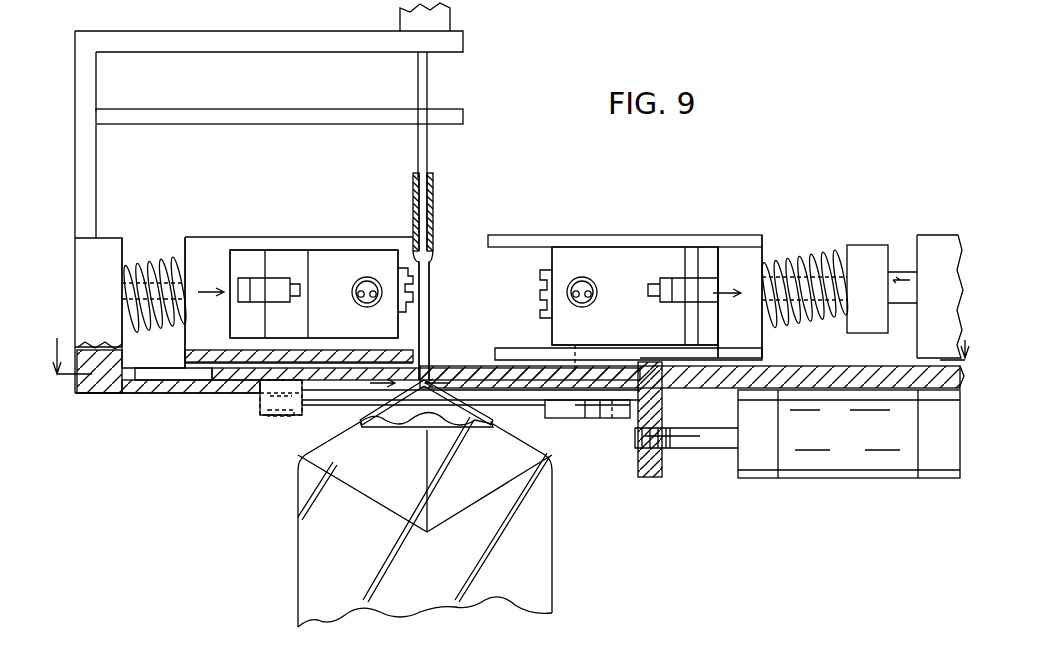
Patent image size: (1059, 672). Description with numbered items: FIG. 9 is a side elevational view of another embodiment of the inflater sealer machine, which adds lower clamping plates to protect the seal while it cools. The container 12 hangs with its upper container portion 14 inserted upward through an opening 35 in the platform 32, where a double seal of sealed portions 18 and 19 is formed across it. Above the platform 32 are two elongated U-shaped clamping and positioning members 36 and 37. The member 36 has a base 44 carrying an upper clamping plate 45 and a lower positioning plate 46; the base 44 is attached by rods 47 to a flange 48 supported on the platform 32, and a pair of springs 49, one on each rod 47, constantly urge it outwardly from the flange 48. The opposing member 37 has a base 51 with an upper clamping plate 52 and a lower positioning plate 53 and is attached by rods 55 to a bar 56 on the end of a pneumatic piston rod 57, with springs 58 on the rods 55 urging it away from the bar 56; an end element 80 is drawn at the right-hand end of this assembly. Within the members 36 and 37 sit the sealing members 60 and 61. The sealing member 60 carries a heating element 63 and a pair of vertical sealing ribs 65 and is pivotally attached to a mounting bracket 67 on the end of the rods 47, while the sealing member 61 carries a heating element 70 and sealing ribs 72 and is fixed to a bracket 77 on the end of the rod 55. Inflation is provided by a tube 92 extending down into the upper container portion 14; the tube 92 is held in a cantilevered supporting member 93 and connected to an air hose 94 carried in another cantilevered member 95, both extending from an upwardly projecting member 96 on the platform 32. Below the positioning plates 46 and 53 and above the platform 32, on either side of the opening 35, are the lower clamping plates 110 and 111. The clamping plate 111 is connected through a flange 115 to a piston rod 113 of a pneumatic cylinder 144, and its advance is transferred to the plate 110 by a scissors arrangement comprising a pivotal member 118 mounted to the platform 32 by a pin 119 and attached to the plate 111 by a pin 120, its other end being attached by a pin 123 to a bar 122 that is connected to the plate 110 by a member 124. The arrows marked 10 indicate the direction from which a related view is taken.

The section line / viewing direction 10 is at (506, 338).
The container 12 is at (553, 553).
The upper container portion 14 is at (433, 200).
The sealed portion 18 is at (430, 275).
The sealed portion 19 is at (430, 305).
The platform 32 is at (147, 392).
The opening 35 is at (484, 375).
The clamping and positioning member 36 is at (277, 237).
The clamping and positioning member 37 is at (666, 226).
The base 44 is at (217, 240).
The upper clamping plate 45 is at (392, 245).
The lower positioning plate 46 is at (325, 345).
The rods 47 is at (170, 330).
The flange 48 is at (86, 282).
The springs 49 is at (155, 258).
The base 51 is at (742, 248).
The upper clamping plate 52 is at (522, 237).
The lower positioning plate 53 is at (530, 350).
The rods 55 is at (780, 258).
The bar 56 is at (865, 245).
The pneumatic piston rod 57 is at (903, 268).
The springs 58 is at (805, 255).
The sealing member 60 is at (348, 250).
The sealing member 61 is at (590, 248).
The heating element 63 is at (352, 290).
The sealing ribs 65 is at (400, 276).
The mounting bracket 67 is at (290, 305).
The heating element 70 is at (597, 288).
The sealing ribs 72 is at (540, 285).
The bracket 77 is at (686, 340).
The frame end member 80 is at (957, 226).
The tube 92 is at (428, 148).
The cantilevered supporting member 93 is at (300, 113).
The air hose 94 is at (445, 14).
The cantilevered member 95 is at (258, 45).
The upwardly projecting member 96 is at (88, 162).
The lower clamping plate 110 is at (388, 370).
The lower clamping plate 111 is at (440, 368).
The piston rod 113 is at (700, 448).
The flange 115 is at (650, 480).
The pivotal member 118 is at (540, 400).
The pin 119 is at (585, 420).
The pin 120 is at (577, 325).
The bar 122 is at (340, 422).
The pin 123 is at (612, 420).
The member 124 is at (262, 395).
The cylinder 144 is at (836, 478).